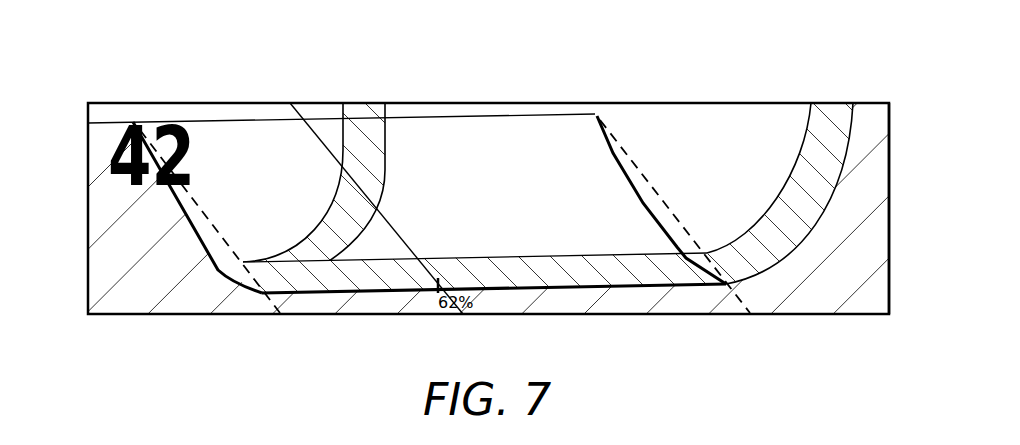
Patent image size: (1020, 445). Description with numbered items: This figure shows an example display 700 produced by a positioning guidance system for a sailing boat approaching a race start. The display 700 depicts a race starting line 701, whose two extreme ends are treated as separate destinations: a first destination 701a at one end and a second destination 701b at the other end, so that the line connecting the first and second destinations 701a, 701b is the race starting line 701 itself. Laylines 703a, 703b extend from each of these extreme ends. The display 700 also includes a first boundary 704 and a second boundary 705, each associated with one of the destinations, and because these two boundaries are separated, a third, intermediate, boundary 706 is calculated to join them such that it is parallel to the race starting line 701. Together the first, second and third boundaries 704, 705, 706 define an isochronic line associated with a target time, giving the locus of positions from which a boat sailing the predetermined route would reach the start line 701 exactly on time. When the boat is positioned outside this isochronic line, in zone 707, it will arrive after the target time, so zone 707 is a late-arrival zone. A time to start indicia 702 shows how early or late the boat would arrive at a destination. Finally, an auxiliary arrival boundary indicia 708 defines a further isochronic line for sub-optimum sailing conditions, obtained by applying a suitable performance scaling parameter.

The display 700 is at (786, 76).
The race starting line 701 is at (470, 115).
The first destination 701a is at (132, 122).
The second destination 701b is at (595, 113).
The time to start indicia 702 is at (113, 150).
The layline 703a is at (200, 208).
The layline 703b is at (653, 187).
The first boundary 704 is at (233, 280).
The second boundary 705 is at (889, 197).
The third, intermediate, boundary 706 is at (372, 295).
The zone 707 is at (125, 300).
The auxiliary arrival boundary indicia 708 is at (532, 262).